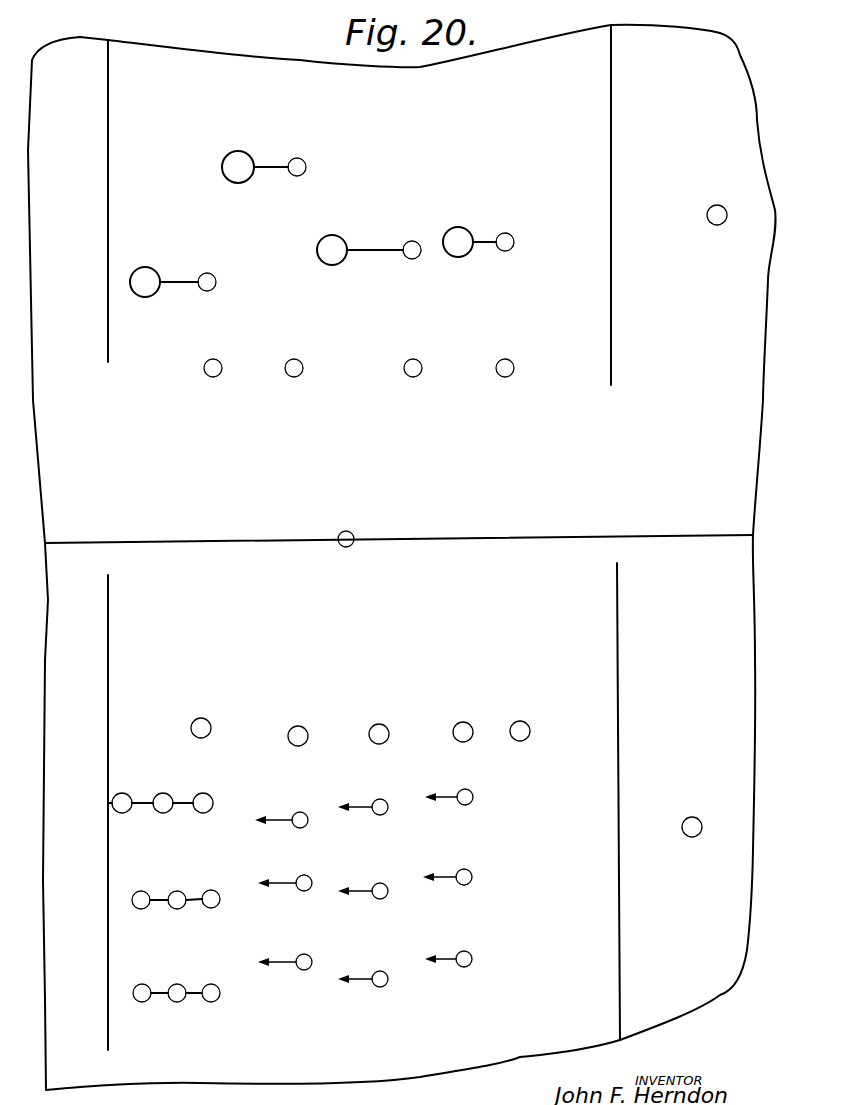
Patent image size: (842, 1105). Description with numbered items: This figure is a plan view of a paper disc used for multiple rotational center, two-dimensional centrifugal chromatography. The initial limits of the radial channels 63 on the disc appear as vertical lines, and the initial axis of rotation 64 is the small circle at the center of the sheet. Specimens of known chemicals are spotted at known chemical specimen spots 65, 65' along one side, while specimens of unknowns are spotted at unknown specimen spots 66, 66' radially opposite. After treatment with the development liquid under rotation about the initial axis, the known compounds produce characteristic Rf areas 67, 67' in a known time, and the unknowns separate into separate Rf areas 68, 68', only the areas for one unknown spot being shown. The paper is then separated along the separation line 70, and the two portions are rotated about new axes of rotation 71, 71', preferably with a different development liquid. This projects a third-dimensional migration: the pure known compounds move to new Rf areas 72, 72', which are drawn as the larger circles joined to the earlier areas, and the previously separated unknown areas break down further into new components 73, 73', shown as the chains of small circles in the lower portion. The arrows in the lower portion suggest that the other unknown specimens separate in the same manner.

The initial limits of radial channels 63 is at (108, 223).
The initial axis of rotation 64 is at (352, 522).
The known chemical specimen spot 65 is at (213, 355).
The known chemical specimen spot 65' is at (301, 355).
The unknown specimen spot 66 is at (212, 711).
The unknown specimen spot 66' is at (309, 715).
The Rf area of known compound 67 is at (192, 262).
The Rf area of known compound 67' is at (292, 149).
The separated Rf area of unknown 68 is at (211, 793).
The separated Rf area of unknown 68' is at (220, 880).
The separation line 70 is at (713, 513).
The new axis of rotation 71 is at (723, 231).
The new axis of rotation 71' is at (689, 846).
The new Rf area of pure compound 72 is at (144, 301).
The new Rf area of pure compound 72' is at (321, 267).
The new component 73 is at (160, 791).
The new component 73' is at (131, 787).